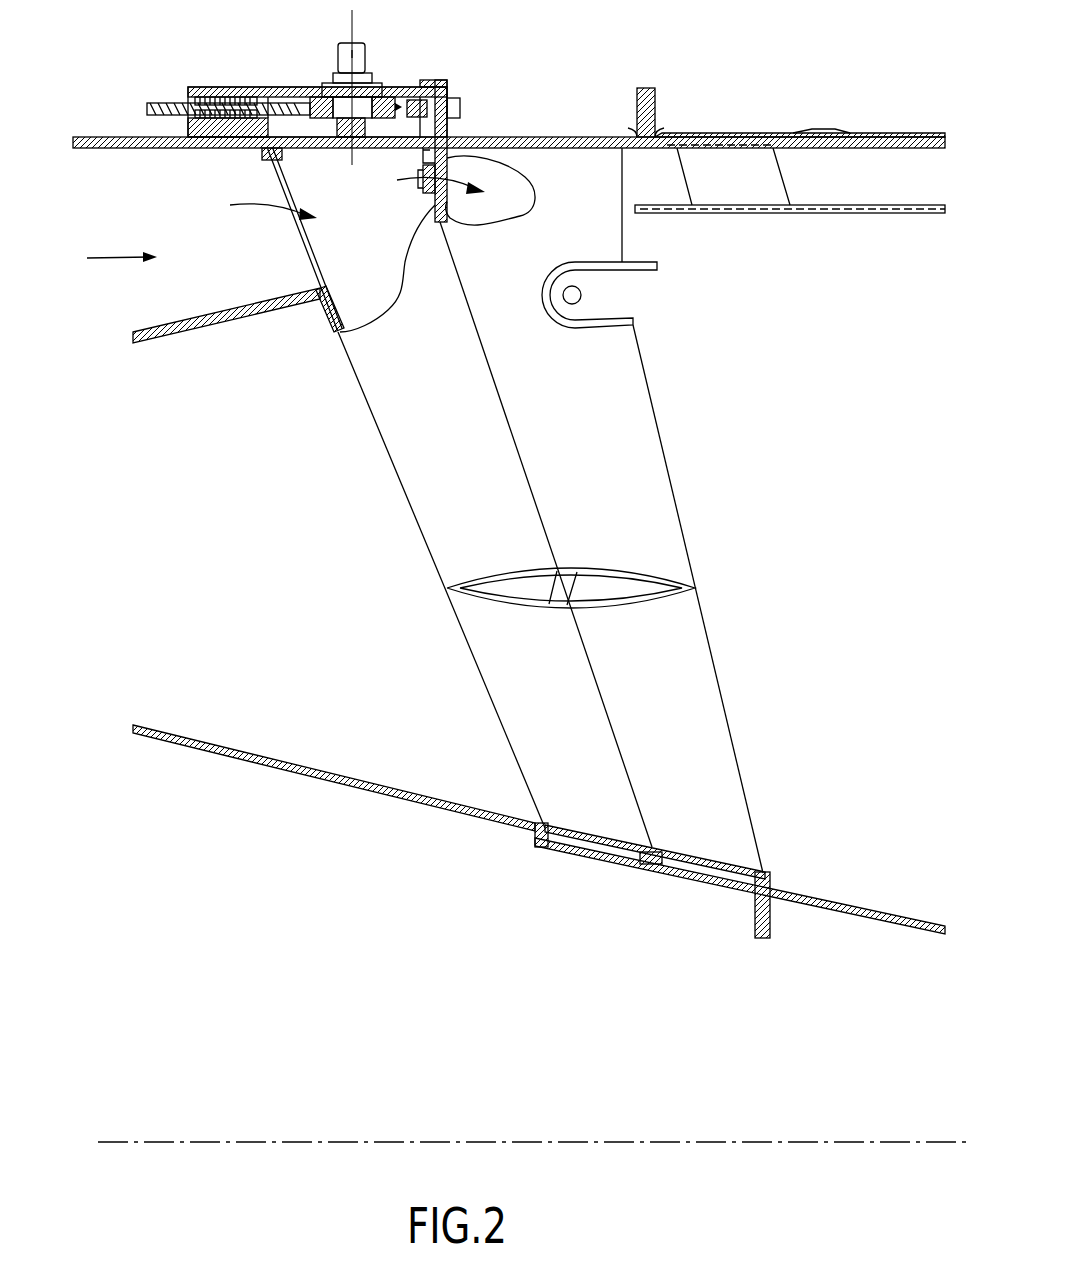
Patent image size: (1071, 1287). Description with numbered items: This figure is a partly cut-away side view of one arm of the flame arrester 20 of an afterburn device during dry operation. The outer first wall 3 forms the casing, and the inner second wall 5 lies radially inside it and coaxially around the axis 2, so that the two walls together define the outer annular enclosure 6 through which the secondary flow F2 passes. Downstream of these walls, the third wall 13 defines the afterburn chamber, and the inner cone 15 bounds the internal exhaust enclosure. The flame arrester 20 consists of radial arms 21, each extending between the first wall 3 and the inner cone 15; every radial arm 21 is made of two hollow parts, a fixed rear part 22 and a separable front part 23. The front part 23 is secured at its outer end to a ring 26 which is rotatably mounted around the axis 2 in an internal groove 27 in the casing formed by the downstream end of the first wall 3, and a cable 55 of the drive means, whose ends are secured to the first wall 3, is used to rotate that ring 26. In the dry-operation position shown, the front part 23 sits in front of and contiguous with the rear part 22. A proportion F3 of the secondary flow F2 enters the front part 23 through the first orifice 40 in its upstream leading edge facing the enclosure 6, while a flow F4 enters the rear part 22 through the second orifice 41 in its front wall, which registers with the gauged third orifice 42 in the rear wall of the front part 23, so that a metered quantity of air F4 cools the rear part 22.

The axis 2 is at (290, 1140).
The first wall 3 is at (120, 137).
The second wall 5 is at (208, 325).
The outer annular enclosure 6 is at (172, 204).
The third wall 13 is at (800, 142).
The inner cone 15 is at (387, 793).
The flame arrester 20 is at (611, 510).
The radial arm 21 is at (533, 408).
The rear part 22 is at (657, 485).
The front part 23 is at (408, 413).
The ring 26 is at (400, 138).
The internal groove 27 is at (300, 132).
The first orifice 40 is at (303, 243).
The second orifice 41 is at (447, 167).
The gauged third orifice 42 is at (422, 178).
The cable 55 is at (157, 103).
The secondary flow F2 is at (132, 255).
The proportion of secondary flow F3 is at (268, 208).
The cooling flow F4 is at (408, 172).